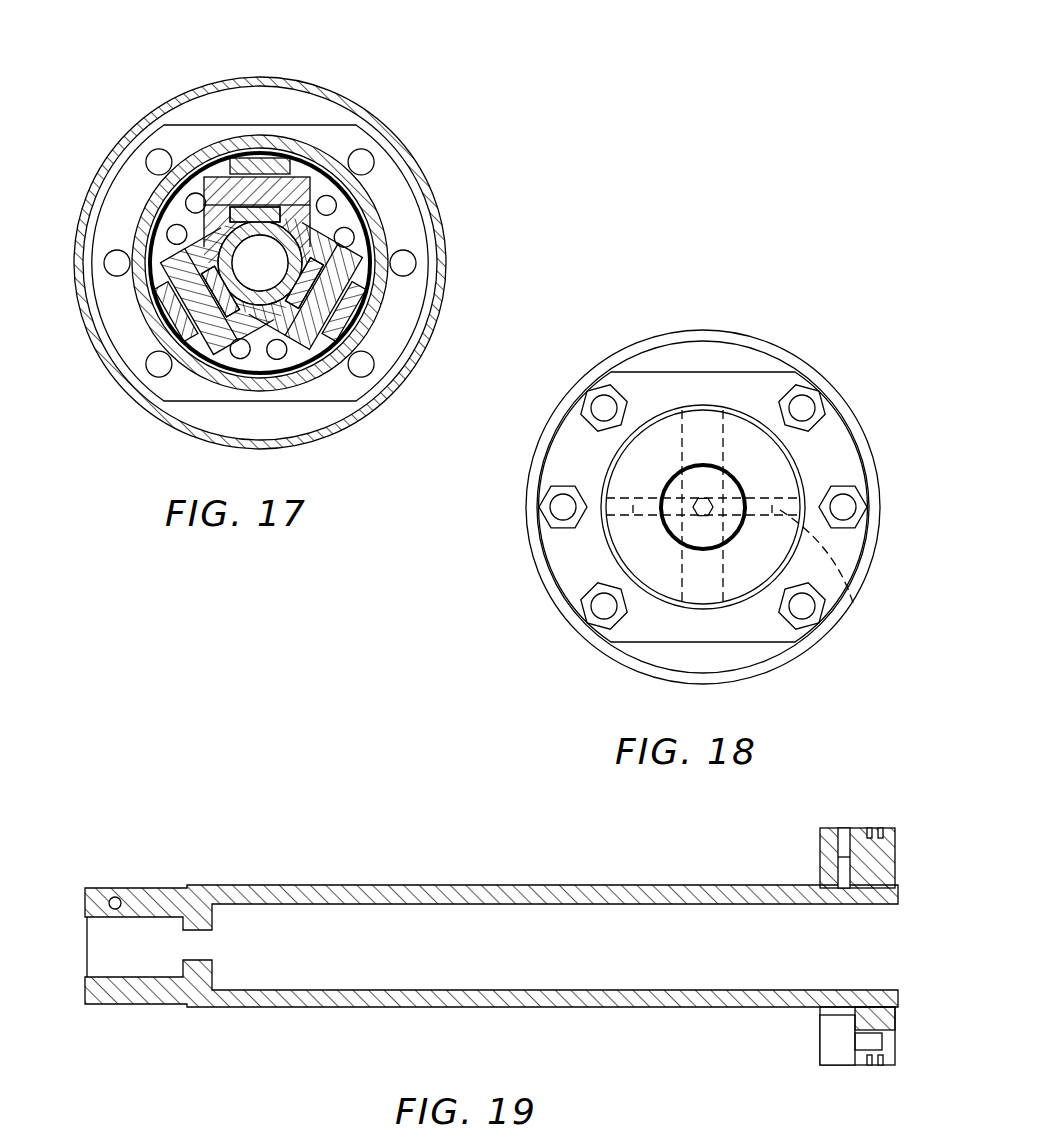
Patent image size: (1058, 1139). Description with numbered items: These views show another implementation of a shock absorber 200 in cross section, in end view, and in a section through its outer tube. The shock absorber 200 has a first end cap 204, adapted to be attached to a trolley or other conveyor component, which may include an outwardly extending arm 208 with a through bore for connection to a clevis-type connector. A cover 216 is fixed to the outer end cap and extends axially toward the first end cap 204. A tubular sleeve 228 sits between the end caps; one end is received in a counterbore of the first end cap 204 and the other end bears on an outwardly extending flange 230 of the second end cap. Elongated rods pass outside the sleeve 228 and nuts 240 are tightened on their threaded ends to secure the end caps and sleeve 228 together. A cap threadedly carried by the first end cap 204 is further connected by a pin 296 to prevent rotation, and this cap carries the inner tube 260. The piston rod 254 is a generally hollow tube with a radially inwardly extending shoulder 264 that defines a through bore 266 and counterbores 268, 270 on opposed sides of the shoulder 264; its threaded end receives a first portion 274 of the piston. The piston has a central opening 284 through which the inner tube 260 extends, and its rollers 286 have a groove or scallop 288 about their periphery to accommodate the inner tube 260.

In FIG. 18, the shock absorber 200 is at (823, 310).
In FIG. 18, the first end cap 204 is at (735, 383).
In FIG. 18, the outwardly extending arm 208 is at (636, 541).
In FIG. 17, the cover 216 is at (422, 178).
In FIG. 18, the cover 216 is at (878, 578).
In FIG. 17, the tubular sleeve 228 is at (378, 222).
In FIG. 17, the outwardly extending flange 230 is at (407, 235).
In FIG. 18, the nuts 240 is at (826, 440).
In FIG. 19, the piston rod 254 is at (431, 880).
In FIG. 17, the inner tube 260 is at (253, 300).
In FIG. 19, the shoulder 264 is at (212, 976).
In FIG. 19, the through bore 266 is at (210, 944).
In FIG. 19, the counterbore 268 is at (135, 962).
In FIG. 19, the counterbore 270 is at (372, 980).
In FIG. 19, the first portion of the piston 274 is at (887, 824).
In FIG. 17, the central opening 284 is at (252, 265).
In FIG. 17, the rollers 286 is at (313, 162).
In FIG. 17, the groove or scallop 288 is at (272, 158).
In FIG. 18, the pin 296 is at (853, 603).